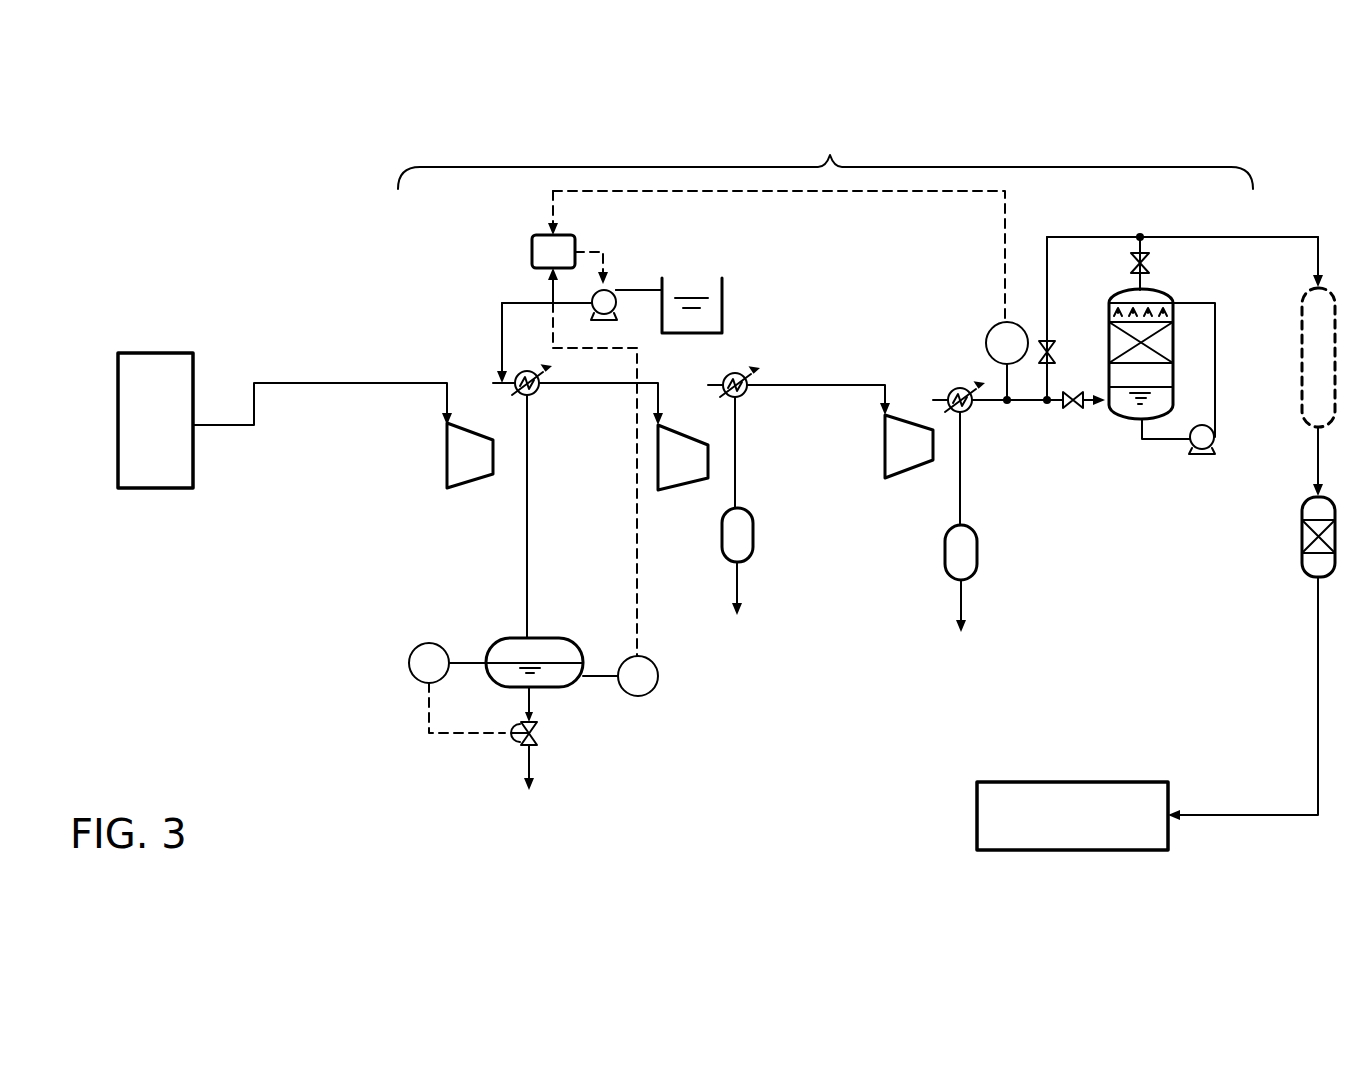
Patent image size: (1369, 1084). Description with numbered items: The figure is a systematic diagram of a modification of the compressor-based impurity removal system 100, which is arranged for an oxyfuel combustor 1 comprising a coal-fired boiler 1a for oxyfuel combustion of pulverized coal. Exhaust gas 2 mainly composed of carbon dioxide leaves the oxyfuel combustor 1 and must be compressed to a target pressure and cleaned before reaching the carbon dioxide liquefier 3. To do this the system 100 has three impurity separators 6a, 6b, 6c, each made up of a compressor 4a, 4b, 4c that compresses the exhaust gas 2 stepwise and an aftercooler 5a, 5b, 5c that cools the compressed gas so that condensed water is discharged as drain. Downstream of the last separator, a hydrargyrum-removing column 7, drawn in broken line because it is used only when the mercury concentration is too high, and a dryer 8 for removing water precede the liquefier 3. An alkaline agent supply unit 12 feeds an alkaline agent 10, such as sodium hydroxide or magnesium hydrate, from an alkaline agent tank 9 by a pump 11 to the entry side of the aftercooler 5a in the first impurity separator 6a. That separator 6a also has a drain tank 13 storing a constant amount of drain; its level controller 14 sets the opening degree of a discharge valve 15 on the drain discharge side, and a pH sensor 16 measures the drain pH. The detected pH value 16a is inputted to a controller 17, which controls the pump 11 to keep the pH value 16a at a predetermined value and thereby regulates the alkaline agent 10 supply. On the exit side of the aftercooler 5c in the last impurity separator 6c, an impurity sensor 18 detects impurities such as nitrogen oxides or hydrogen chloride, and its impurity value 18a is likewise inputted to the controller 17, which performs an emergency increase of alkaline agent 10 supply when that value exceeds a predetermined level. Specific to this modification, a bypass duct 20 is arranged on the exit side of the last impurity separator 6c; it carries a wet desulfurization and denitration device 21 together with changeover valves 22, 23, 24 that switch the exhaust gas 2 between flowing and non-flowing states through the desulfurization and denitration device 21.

The compressor-based impurity removal system 100 is at (825, 155).
The oxyfuel combustor 1 is at (147, 340).
The coal-fired boiler 1a is at (137, 492).
The exhaust gas 2 is at (380, 383).
The carbon dioxide liquefier 3 is at (977, 818).
The compressor 4a is at (445, 490).
The compressor 4b is at (668, 492).
The compressor 4c is at (884, 480).
The aftercooler 5a is at (535, 394).
The aftercooler 5b is at (747, 395).
The aftercooler 5c is at (970, 410).
The first impurity separator 6a is at (488, 370).
The impurity separator 6b is at (686, 388).
The last impurity separator 6c is at (906, 380).
The hydrargyrum-removing column 7 is at (1300, 403).
The dryer 8 is at (1300, 562).
The alkaline agent tank 9 is at (722, 290).
The alkaline agent 10 is at (706, 298).
The pump 11 is at (617, 308).
The alkaline agent supply unit 12 is at (638, 272).
The drain tank 13 is at (565, 636).
The level controller 14 is at (409, 663).
The discharge valve 15 is at (518, 750).
The pH sensor 16 is at (645, 695).
The pH value 16a is at (637, 463).
The controller 17 is at (532, 250).
The impurity sensor 18 is at (990, 325).
The impurity value 18a is at (860, 192).
The bypass duct 20 is at (1090, 405).
The wet desulfurization and denitration device 21 is at (1194, 286).
The changeover valve 22 is at (1063, 410).
The changeover valve 23 is at (1052, 340).
The changeover valve 24 is at (1130, 262).